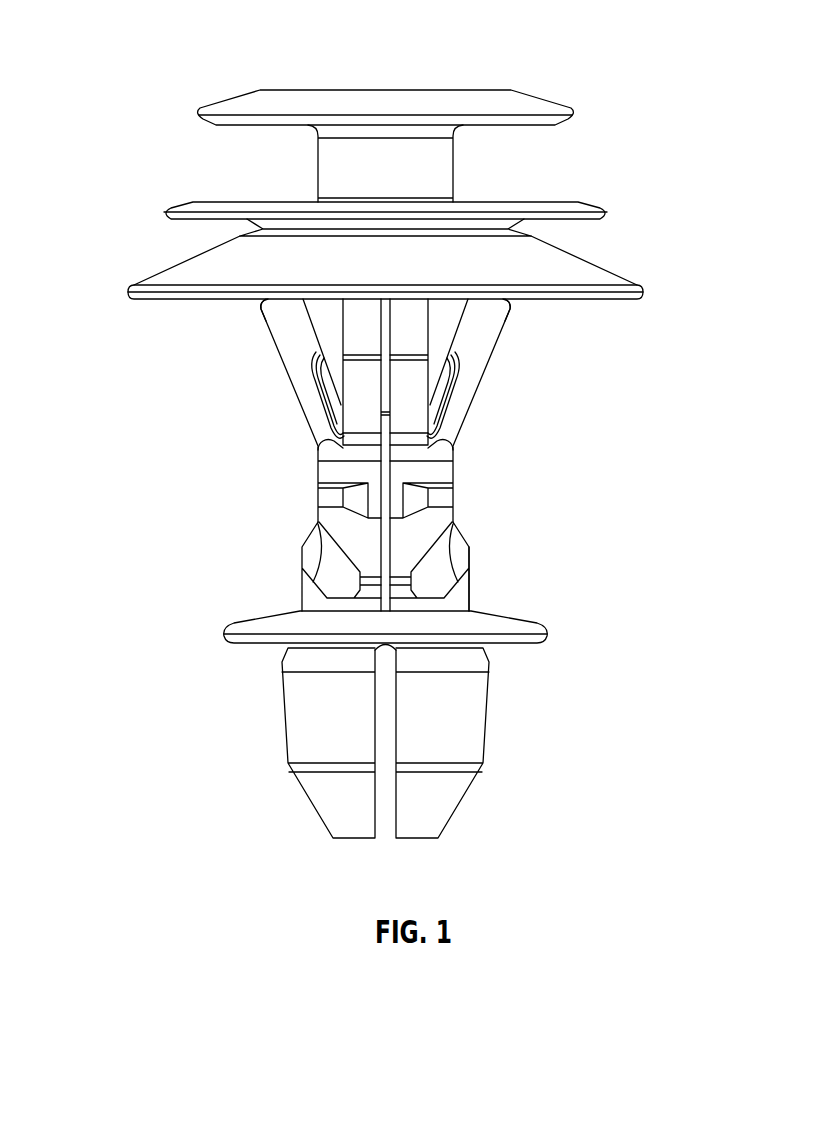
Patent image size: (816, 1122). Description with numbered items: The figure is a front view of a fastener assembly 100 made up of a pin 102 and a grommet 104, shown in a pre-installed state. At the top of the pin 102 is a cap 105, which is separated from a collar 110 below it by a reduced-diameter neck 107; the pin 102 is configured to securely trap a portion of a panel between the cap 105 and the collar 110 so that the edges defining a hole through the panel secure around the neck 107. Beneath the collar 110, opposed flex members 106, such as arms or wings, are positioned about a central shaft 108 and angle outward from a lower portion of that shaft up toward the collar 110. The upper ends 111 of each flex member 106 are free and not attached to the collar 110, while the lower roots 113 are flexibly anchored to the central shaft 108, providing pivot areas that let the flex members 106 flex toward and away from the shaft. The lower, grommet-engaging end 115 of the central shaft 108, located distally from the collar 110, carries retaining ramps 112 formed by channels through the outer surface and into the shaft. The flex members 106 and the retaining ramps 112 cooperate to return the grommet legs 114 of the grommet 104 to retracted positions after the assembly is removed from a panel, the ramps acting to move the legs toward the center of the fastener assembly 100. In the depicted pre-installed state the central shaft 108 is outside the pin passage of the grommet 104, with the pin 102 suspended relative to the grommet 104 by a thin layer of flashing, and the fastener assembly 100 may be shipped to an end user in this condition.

The fastener assembly 100 is at (168, 68).
The pin 102 is at (462, 169).
The grommet 104 is at (553, 608).
The cap 105 is at (553, 103).
The flex members 106 is at (260, 330).
The neck 107 is at (318, 162).
The central shaft 108 is at (408, 418).
The collar 110 is at (607, 276).
The upper ends 111 is at (264, 302).
The retaining ramps 112 is at (316, 542).
The lower roots 113 is at (455, 447).
The grommet legs 114 is at (288, 736).
The grommet-engaging end 115 is at (478, 584).